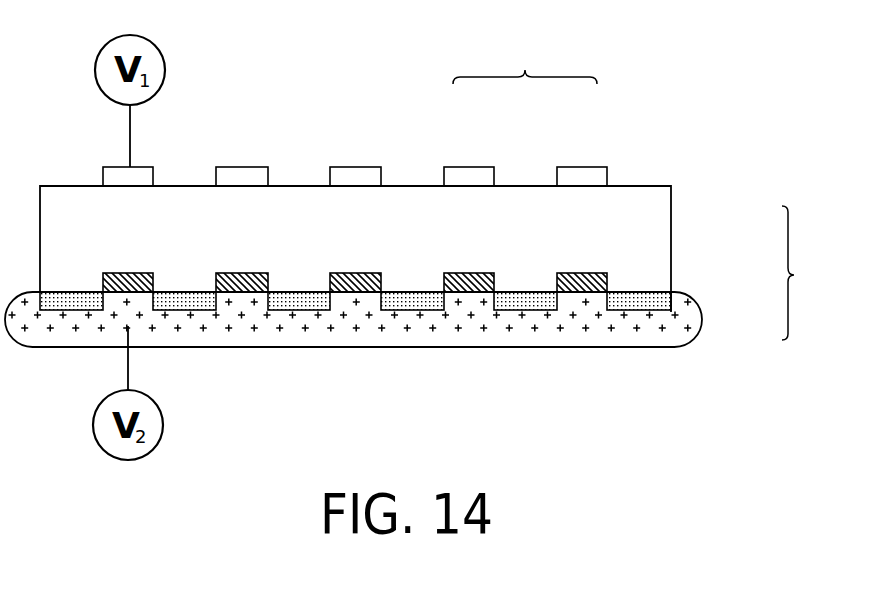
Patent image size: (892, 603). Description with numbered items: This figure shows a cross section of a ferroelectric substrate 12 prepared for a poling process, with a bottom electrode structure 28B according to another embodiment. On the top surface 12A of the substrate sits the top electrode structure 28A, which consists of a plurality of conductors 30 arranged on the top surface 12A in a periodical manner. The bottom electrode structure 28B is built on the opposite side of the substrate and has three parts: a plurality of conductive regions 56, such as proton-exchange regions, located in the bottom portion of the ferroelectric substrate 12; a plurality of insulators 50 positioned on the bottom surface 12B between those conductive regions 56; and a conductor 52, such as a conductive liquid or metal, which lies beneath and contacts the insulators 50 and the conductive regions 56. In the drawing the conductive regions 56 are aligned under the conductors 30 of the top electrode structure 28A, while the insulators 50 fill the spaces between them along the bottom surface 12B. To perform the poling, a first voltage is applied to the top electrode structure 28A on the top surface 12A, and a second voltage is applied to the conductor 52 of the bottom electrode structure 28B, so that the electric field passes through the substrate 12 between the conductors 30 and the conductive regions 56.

The ferroelectric substrate 12 is at (371, 254).
The top surface 12A is at (641, 186).
The bottom surface 12B is at (580, 295).
The top electrode structure 28A is at (525, 60).
The bottom electrode structure 28B is at (813, 273).
The conductors 30 is at (469, 173).
The insulators 50 is at (662, 297).
The conductor 52 is at (690, 323).
The conductive regions 56 is at (596, 283).